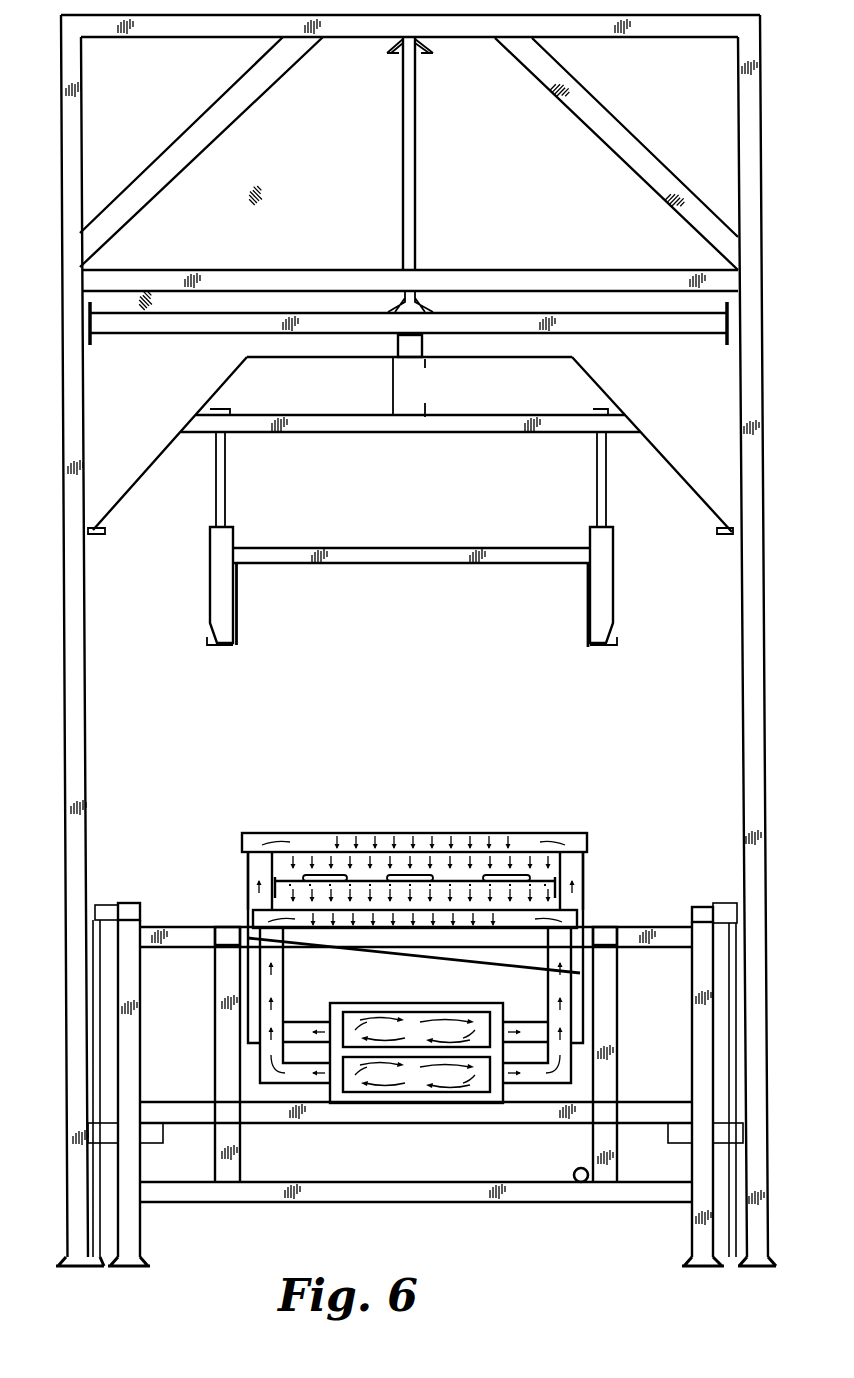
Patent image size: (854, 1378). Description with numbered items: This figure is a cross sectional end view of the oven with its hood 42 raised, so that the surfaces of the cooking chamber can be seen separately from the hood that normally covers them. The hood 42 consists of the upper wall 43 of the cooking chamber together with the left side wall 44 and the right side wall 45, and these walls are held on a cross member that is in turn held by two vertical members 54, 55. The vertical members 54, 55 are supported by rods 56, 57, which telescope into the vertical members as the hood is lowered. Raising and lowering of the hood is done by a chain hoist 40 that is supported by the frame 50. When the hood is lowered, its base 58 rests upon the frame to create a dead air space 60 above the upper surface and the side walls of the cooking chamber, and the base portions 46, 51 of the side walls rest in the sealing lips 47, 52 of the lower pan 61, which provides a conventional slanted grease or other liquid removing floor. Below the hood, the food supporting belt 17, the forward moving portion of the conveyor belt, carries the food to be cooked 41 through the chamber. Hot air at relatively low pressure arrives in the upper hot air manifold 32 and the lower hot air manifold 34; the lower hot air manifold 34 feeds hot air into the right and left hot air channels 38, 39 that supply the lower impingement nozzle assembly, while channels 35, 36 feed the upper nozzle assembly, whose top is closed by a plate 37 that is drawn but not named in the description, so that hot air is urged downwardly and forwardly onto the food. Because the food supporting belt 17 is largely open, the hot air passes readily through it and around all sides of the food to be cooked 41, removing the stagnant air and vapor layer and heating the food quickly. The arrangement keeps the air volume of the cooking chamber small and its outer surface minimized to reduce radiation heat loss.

The forward moving portion of the belt 17 is at (285, 878).
The upper hot air manifold 32 is at (355, 1014).
The lower hot air manifold 34 is at (475, 1088).
The channel 35 is at (253, 866).
The channel 36 is at (588, 858).
The top plate 37 is at (432, 835).
The hot air channel 38 is at (267, 982).
The hot air channel 39 is at (565, 985).
The chain hoist 40 is at (537, 928).
The food to be cooked 41 is at (328, 872).
The hood 42 is at (160, 448).
The upper wall of the cooking chamber 43 is at (458, 576).
The left side wall 44 is at (237, 603).
The right side wall 45 is at (587, 603).
The base portion 46 is at (225, 645).
The sealing lip 47 is at (235, 923).
The frame 50 is at (172, 925).
The base portion 51 is at (610, 645).
The sealing lip 52 is at (605, 925).
The vertical member 54 is at (215, 558).
The vertical member 55 is at (605, 550).
The rod 56 is at (225, 492).
The rod 57 is at (598, 487).
The base of the hood 58 is at (95, 540).
The dead air space 60 is at (565, 388).
The lower pan 61 is at (453, 963).